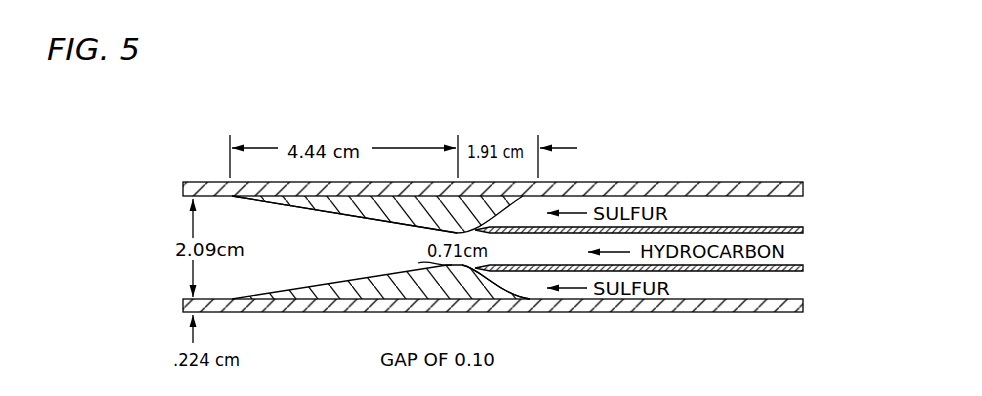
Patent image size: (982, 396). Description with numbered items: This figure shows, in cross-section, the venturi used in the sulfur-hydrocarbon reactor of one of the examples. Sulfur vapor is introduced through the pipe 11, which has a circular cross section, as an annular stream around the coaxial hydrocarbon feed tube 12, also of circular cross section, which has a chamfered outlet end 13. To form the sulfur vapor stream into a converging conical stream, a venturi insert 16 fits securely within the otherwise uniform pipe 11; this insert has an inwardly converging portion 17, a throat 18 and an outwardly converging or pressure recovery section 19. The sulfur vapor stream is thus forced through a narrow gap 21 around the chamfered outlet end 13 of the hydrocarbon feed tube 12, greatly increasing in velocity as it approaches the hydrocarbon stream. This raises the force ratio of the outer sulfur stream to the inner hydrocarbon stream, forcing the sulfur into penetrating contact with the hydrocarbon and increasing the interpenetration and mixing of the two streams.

The pipe 11 is at (594, 183).
The hydrocarbon feed tube 12 is at (778, 272).
The chamfered outlet end 13 is at (480, 229).
The venturi insert 16 is at (410, 219).
The inwardly converging portion 17 is at (527, 314).
The throat 18 is at (400, 289).
The outwardly converging section 19 is at (348, 213).
The narrow gap 21 is at (468, 268).